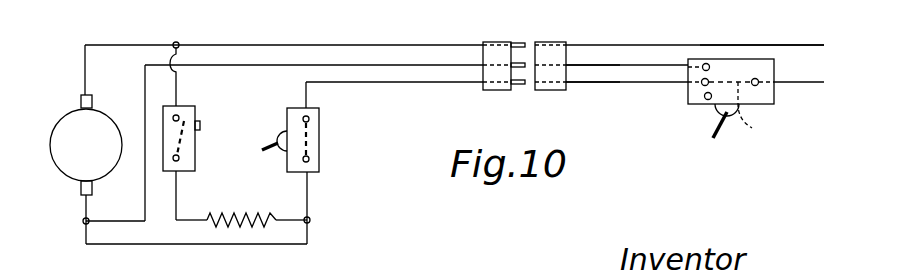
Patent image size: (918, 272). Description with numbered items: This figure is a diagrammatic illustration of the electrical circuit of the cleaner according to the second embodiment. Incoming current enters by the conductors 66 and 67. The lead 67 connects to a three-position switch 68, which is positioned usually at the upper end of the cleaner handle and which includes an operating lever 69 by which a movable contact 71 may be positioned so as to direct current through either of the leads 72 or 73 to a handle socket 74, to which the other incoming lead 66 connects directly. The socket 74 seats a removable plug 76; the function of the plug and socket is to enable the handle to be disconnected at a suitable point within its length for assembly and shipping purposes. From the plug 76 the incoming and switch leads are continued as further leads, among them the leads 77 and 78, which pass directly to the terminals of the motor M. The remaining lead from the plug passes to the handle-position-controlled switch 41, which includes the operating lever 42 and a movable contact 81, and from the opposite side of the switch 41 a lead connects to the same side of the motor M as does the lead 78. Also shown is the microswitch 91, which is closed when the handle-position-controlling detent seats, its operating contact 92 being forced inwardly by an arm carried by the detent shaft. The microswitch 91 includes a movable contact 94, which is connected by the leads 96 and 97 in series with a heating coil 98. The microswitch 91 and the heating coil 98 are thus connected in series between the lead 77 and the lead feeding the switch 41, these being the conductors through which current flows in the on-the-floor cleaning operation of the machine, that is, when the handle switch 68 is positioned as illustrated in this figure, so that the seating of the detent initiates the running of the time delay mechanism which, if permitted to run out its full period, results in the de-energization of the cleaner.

The handle-position-controlled switch 41 is at (321, 125).
The operating lever 42 is at (270, 141).
The conductor 66 is at (800, 45).
The conductor 67 is at (814, 83).
The three-position switch 68 is at (689, 104).
The operating lever 69 is at (712, 140).
The movable contact 71 is at (743, 111).
The lead 72 is at (598, 68).
The lead 73 is at (605, 86).
The handle socket 74 is at (548, 42).
The removable plug 76 is at (496, 42).
The lead 77 is at (358, 45).
The lead 78 is at (386, 67).
The movable contact 81 is at (321, 142).
The microswitch 91 is at (182, 106).
The operating contact 92 is at (200, 128).
The movable contact 94 is at (181, 140).
The lead 96 is at (175, 83).
The lead 97 is at (177, 195).
The heating coil 98 is at (237, 218).
The motor M is at (178, 144).